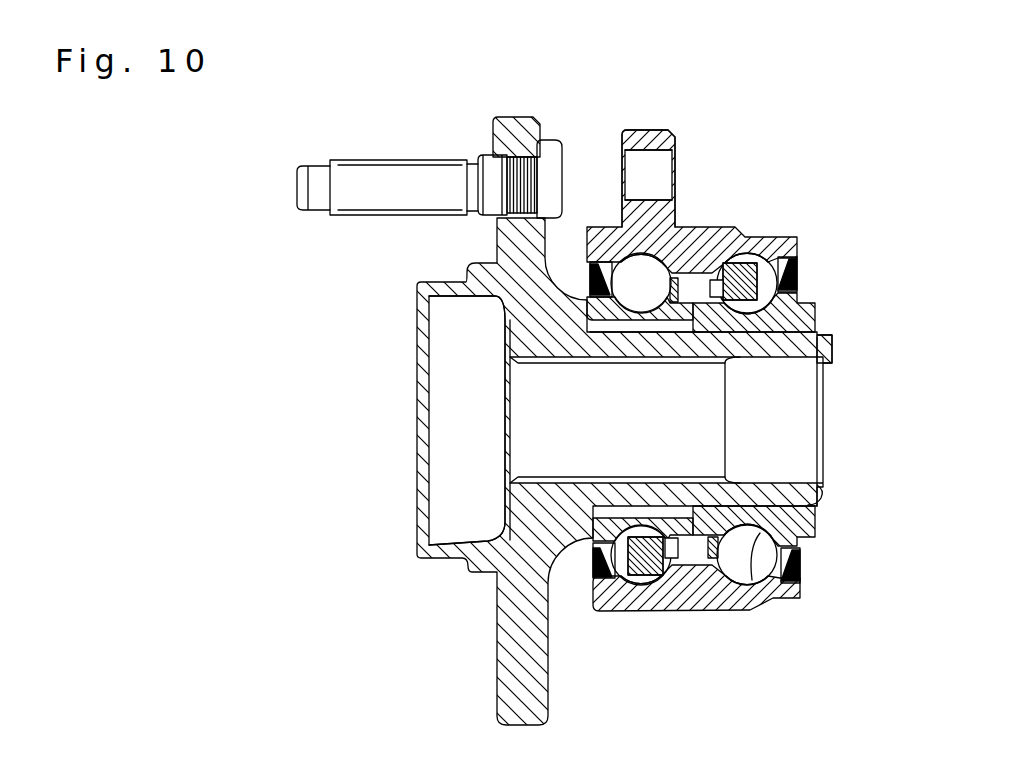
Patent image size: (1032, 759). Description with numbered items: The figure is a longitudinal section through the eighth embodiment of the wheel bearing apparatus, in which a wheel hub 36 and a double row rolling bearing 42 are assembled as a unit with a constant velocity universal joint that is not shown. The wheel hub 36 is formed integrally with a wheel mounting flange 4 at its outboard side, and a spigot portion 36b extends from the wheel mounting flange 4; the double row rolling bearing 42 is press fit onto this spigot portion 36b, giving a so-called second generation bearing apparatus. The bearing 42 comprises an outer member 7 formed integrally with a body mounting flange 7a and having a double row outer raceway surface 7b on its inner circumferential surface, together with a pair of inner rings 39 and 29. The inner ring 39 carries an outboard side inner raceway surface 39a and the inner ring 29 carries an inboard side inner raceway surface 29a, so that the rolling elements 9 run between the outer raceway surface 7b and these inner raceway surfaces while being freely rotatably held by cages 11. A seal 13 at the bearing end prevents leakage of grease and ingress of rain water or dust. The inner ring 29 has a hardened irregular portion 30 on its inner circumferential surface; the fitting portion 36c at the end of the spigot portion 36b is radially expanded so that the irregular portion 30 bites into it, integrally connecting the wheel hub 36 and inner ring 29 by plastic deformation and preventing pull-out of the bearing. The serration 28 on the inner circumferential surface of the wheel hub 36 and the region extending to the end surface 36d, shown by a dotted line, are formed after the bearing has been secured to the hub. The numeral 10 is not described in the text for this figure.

The wheel mounting flange 4 is at (502, 134).
The outer member 7 is at (689, 233).
The body mounting flange 7a is at (637, 140).
The outer raceway surface 7b is at (637, 268).
The rolling element 9 is at (723, 586).
The hub bolt 10 is at (399, 167).
The cage 11 is at (719, 262).
The seal 13 is at (801, 567).
The serration 28 is at (546, 358).
The inner ring 29 is at (816, 313).
The inner raceway surface 29a is at (764, 590).
The irregular portion 30 is at (822, 496).
The wheel hub 36 is at (482, 281).
The spigot portion 36b is at (744, 348).
The fitting portion 36c is at (833, 345).
The end surface 36d is at (790, 365).
The inner ring 39 is at (590, 293).
The inner raceway surface 39a is at (633, 350).
The double row rolling bearing 42 is at (716, 384).